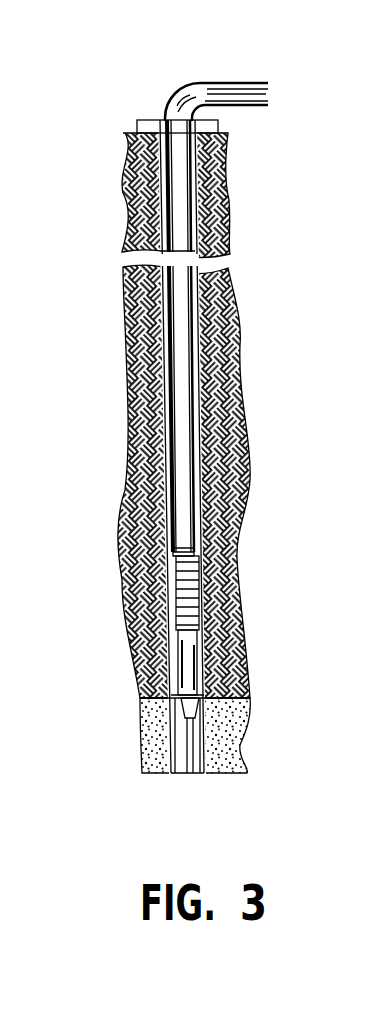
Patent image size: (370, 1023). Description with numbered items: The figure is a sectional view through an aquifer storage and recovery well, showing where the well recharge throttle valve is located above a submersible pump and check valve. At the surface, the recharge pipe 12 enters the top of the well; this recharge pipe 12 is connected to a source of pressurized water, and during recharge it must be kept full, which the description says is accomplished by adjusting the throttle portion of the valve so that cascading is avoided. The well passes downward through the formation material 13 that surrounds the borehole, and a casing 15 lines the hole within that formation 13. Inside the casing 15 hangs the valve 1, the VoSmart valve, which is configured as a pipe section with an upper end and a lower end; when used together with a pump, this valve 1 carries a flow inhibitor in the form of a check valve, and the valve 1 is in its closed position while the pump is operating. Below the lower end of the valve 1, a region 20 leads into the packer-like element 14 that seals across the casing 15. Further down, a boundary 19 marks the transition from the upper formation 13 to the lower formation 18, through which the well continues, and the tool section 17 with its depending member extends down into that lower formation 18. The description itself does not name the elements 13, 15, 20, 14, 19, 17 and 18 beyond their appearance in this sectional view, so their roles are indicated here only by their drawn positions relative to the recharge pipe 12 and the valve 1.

The recharge pipe 12 is at (183, 85).
The formation 13 is at (165, 443).
The VoSmart valve 1 is at (173, 510).
The well casing 15 is at (170, 647).
The lower end of tubing 20 is at (190, 557).
The packer 14 is at (203, 580).
The formation boundary 19 is at (240, 698).
The tool 17 is at (190, 740).
The lower formation 18 is at (147, 767).